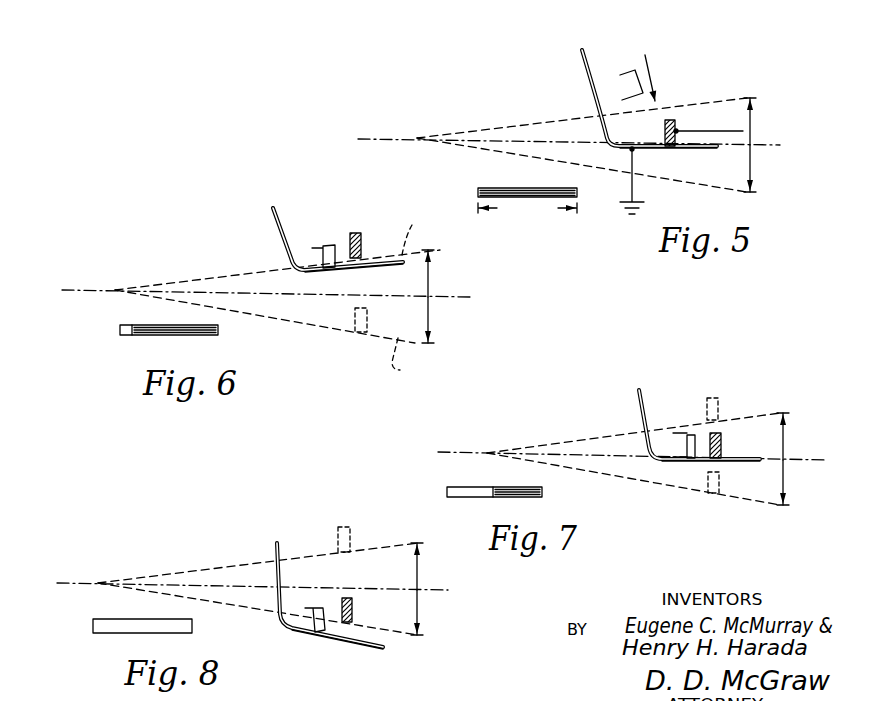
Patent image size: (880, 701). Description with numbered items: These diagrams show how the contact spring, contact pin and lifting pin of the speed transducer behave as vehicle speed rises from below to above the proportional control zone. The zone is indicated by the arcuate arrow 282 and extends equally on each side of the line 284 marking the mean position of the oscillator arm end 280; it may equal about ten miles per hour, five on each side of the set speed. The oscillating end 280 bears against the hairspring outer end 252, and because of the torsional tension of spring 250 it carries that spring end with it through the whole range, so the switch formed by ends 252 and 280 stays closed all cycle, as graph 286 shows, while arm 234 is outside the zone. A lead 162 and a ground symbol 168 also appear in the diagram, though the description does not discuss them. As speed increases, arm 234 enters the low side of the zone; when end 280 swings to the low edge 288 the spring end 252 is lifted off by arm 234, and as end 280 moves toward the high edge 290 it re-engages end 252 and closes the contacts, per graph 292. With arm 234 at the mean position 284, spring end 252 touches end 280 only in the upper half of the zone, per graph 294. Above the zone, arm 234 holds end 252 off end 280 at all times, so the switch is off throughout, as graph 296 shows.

In FIG. 5, the lead conductor 162 is at (707, 131).
In FIG. 5, the ground connection 168 is at (632, 178).
In FIG. 5, the arm 234 is at (633, 71).
In FIG. 6, the arm 234 is at (328, 245).
In FIG. 7, the arm 234 is at (690, 435).
In FIG. 8, the arm 234 is at (320, 608).
In FIG. 5, the hairspring 250 is at (595, 86).
In FIG. 6, the hairspring 250 is at (280, 229).
In FIG. 7, the hairspring 250 is at (638, 406).
In FIG. 8, the hairspring 250 is at (275, 547).
In FIG. 5, the hairspring outer end 252 is at (690, 149).
In FIG. 6, the hairspring outer end 252 is at (385, 273).
In FIG. 7, the hairspring outer end 252 is at (737, 460).
In FIG. 8, the hairspring outer end 252 is at (382, 651).
In FIG. 5, the end of oscillator arm 280 is at (670, 120).
In FIG. 6, the end of oscillator arm 280 is at (360, 233).
In FIG. 7, the end of oscillator arm 280 is at (722, 437).
In FIG. 8, the end of oscillator arm 280 is at (350, 533).
In FIG. 5, the arcuate arrow 282 is at (750, 165).
In FIG. 6, the arcuate arrow 282 is at (432, 312).
In FIG. 7, the arcuate arrow 282 is at (785, 480).
In FIG. 8, the arcuate arrow 282 is at (420, 603).
In FIG. 5, the mean position line 284 is at (775, 145).
In FIG. 6, the mean position line 284 is at (457, 297).
In FIG. 7, the mean position line 284 is at (803, 458).
In FIG. 8, the mean position line 284 is at (425, 590).
In FIG. 5, the graph 286 is at (478, 192).
In FIG. 6, the low edge of proportional control zone 288 is at (422, 237).
In FIG. 6, the high edge of proportional control zone 290 is at (411, 362).
In FIG. 6, the graph 292 is at (120, 328).
In FIG. 7, the graph 294 is at (447, 489).
In FIG. 8, the graph 296 is at (100, 623).